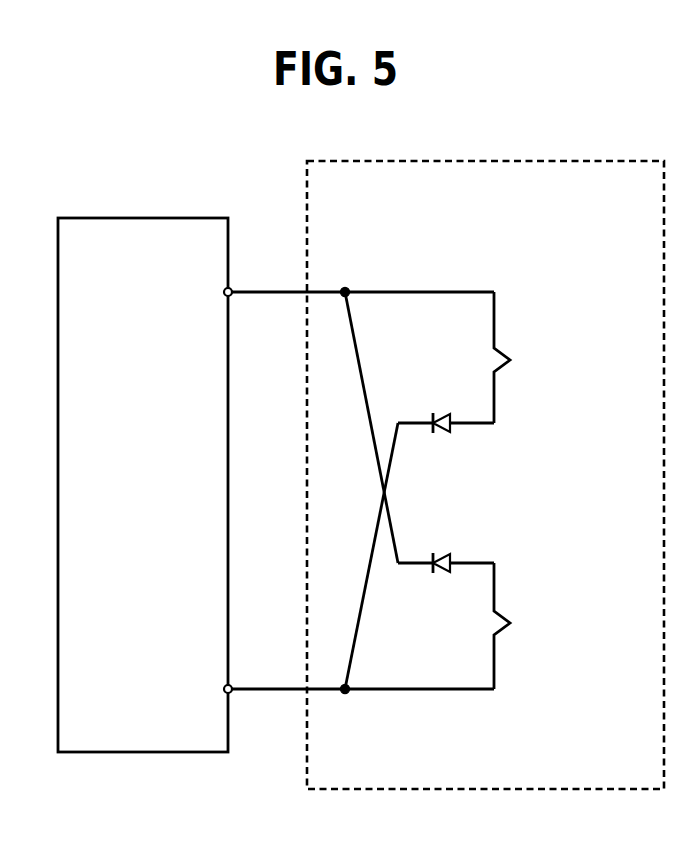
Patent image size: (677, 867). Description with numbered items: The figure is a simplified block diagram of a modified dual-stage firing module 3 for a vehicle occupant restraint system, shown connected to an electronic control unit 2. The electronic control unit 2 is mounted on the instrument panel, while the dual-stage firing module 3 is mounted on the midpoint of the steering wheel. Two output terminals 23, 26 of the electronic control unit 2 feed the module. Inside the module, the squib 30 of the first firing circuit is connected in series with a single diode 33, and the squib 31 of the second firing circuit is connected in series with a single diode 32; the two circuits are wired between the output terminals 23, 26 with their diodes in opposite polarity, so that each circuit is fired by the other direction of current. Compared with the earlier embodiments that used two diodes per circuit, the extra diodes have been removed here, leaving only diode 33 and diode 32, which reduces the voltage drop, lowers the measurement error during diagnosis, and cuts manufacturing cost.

The electronic control unit 2 is at (131, 218).
The dual-stage firing module 3 is at (472, 161).
The output terminal 23 is at (233, 289).
The output terminal 26 is at (233, 686).
The squib 30 is at (510, 358).
The squib 31 is at (510, 621).
The diode 32 is at (441, 554).
The diode 33 is at (440, 413).